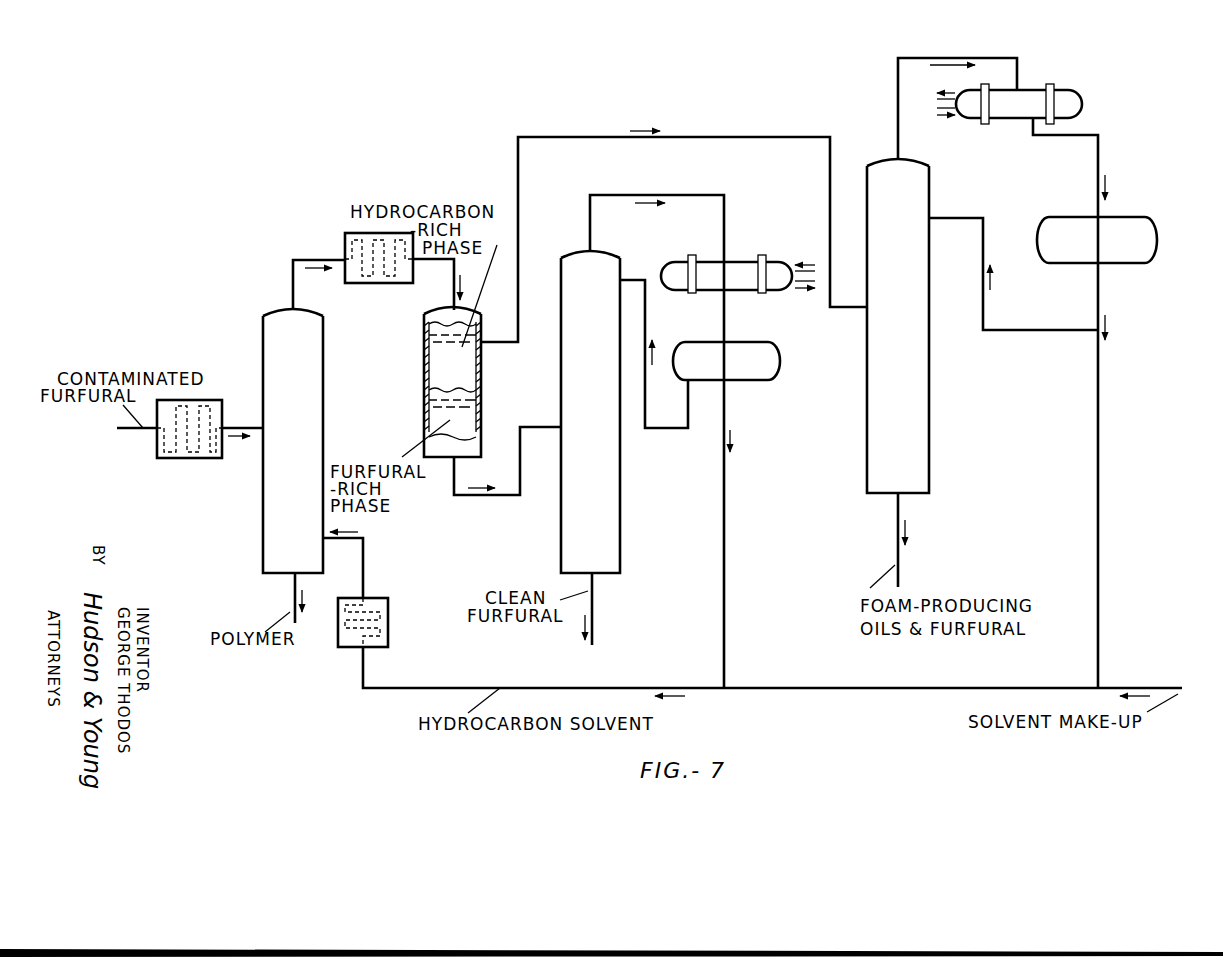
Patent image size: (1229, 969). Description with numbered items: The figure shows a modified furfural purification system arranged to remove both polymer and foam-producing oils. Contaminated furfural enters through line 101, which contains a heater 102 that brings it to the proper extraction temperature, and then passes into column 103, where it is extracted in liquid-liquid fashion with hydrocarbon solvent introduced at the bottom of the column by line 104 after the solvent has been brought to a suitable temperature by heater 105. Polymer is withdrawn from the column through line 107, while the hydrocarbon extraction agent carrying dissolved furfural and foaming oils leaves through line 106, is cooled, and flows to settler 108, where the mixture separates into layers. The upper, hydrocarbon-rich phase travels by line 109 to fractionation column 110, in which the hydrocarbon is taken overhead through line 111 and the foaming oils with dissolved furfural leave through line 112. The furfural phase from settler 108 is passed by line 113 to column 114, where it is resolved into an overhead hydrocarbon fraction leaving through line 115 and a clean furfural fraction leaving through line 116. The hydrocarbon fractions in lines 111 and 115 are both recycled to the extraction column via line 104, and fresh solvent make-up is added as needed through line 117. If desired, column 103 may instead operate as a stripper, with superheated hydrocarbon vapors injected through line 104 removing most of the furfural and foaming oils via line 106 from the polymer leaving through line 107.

The line 101 is at (128, 432).
The heater 102 is at (213, 458).
The column 103 is at (263, 495).
The line 104 is at (365, 572).
The heater 105 is at (390, 634).
The line 106 is at (292, 268).
The line 107 is at (290, 586).
The settler 108 is at (428, 338).
The line 109 is at (570, 137).
The fractionation column 110 is at (930, 408).
The line 111 is at (1098, 415).
The line 112 is at (895, 512).
The line 113 is at (505, 497).
The column 114 is at (620, 530).
The line 115 is at (725, 532).
The line 116 is at (596, 618).
The line 117 is at (1113, 680).